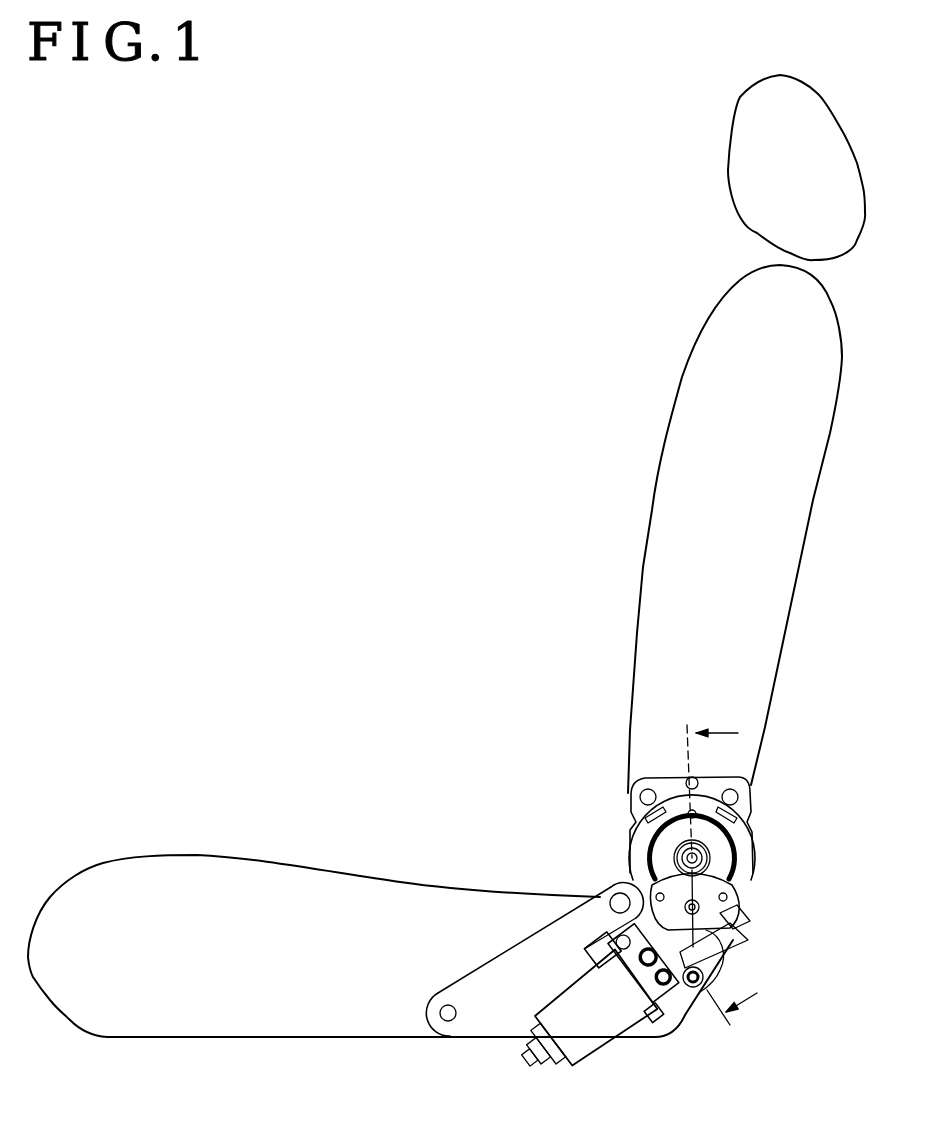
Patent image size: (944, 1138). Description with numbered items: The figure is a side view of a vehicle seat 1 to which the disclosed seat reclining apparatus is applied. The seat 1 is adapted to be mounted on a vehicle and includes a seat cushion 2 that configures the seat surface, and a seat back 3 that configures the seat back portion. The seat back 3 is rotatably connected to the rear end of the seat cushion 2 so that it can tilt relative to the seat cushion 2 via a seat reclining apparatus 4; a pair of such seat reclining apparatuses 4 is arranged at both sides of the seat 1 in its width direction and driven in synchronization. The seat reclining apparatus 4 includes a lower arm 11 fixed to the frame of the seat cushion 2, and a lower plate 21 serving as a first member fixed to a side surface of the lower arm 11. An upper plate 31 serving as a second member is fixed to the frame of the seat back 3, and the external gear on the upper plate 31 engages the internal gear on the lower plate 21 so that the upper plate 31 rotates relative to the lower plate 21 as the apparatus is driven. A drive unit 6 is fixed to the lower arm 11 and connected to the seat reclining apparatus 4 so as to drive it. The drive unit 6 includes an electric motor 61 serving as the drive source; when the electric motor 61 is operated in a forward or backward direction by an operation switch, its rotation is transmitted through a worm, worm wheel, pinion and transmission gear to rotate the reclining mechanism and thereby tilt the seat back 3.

The vehicle seat 1 is at (492, 543).
The seat cushion 2 is at (292, 885).
The seat back 3 is at (797, 490).
The seat reclining apparatus 4 is at (612, 755).
The drive unit 6 is at (606, 1048).
The lower arm 11 is at (495, 975).
The lower plate 21 is at (622, 882).
The upper plate 31 is at (758, 850).
The electric motor 61 is at (578, 1063).